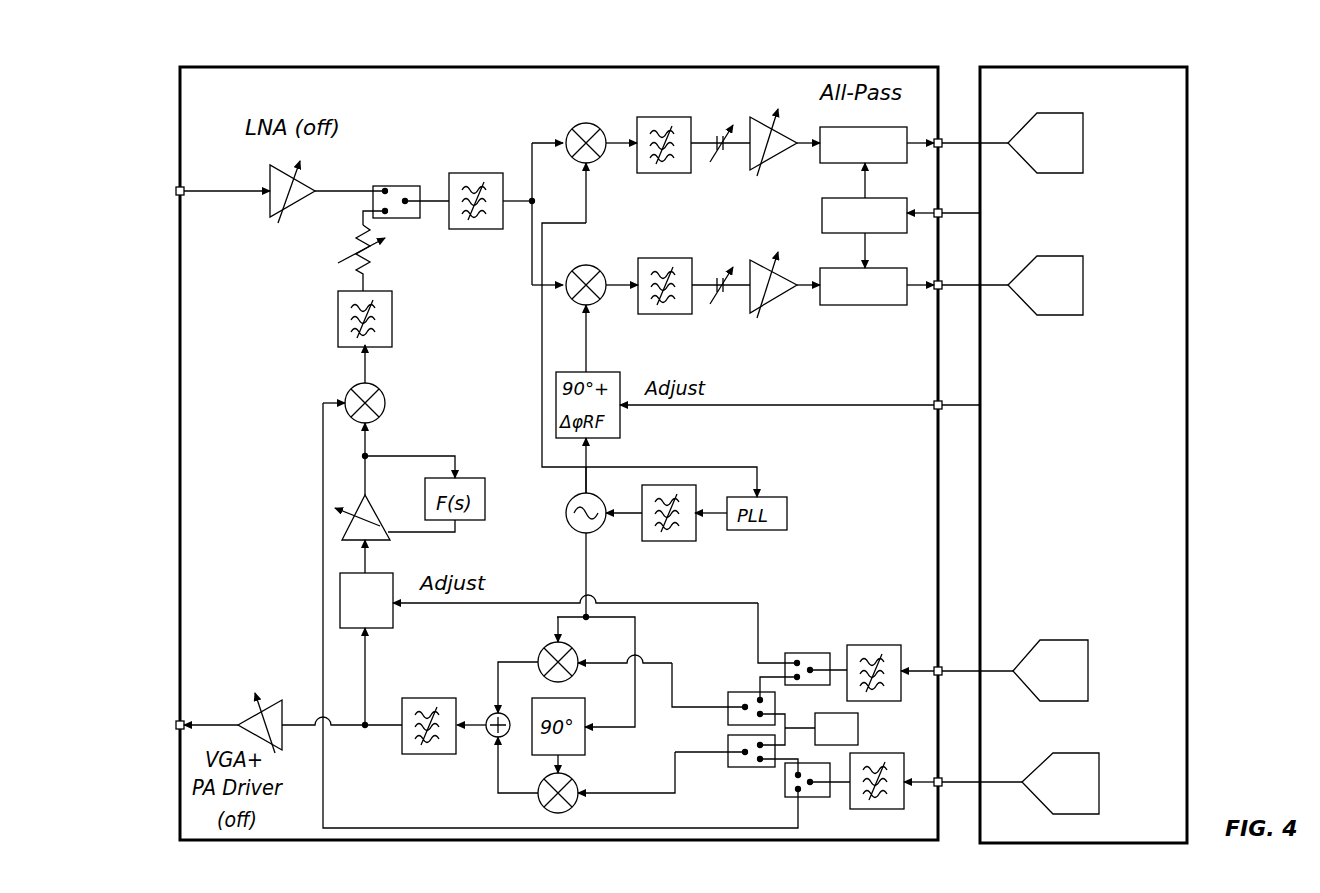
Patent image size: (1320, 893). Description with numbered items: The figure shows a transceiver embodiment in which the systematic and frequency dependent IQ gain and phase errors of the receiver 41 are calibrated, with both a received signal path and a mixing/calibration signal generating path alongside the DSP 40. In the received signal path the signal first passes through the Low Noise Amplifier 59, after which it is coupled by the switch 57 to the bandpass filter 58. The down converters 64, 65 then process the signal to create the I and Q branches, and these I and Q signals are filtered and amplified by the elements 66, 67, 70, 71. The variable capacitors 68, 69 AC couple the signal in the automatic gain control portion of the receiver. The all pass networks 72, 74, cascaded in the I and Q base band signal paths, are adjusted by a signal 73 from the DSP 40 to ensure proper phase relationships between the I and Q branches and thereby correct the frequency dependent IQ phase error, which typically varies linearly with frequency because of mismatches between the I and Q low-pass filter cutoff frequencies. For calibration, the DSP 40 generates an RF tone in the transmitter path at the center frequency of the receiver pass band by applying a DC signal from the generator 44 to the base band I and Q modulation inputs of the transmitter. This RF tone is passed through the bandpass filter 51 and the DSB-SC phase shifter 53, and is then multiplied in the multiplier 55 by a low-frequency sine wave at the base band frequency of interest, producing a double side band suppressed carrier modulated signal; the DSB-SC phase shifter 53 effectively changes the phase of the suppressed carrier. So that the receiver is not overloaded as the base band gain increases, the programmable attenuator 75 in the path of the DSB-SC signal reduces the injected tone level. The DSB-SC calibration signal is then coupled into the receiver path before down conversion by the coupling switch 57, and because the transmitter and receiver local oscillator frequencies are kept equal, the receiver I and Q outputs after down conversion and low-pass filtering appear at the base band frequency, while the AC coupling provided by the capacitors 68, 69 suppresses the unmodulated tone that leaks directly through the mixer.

The DSP 40 is at (1192, 66).
The receiver 41 is at (176, 66).
The generator 44 is at (858, 730).
The bandpass filter 51 is at (421, 698).
The DSB-SC phase shifter 53 is at (345, 573).
The multiplier 55 is at (350, 389).
The switch 57 is at (393, 186).
The bandpass filter 58 is at (474, 173).
The Low Noise Amplifier 59 is at (283, 172).
The down converter 64 is at (573, 124).
The down converter 65 is at (585, 268).
The filter 66 is at (652, 116).
The filter 67 is at (670, 260).
The variable capacitor 68 is at (724, 163).
The variable capacitor 69 is at (724, 305).
The amplifier 70 is at (757, 120).
The amplifier 71 is at (765, 266).
The all pass network 72 is at (877, 126).
The signal 73 is at (877, 198).
The all pass network 74 is at (877, 270).
The programmable attenuator 75 is at (375, 250).